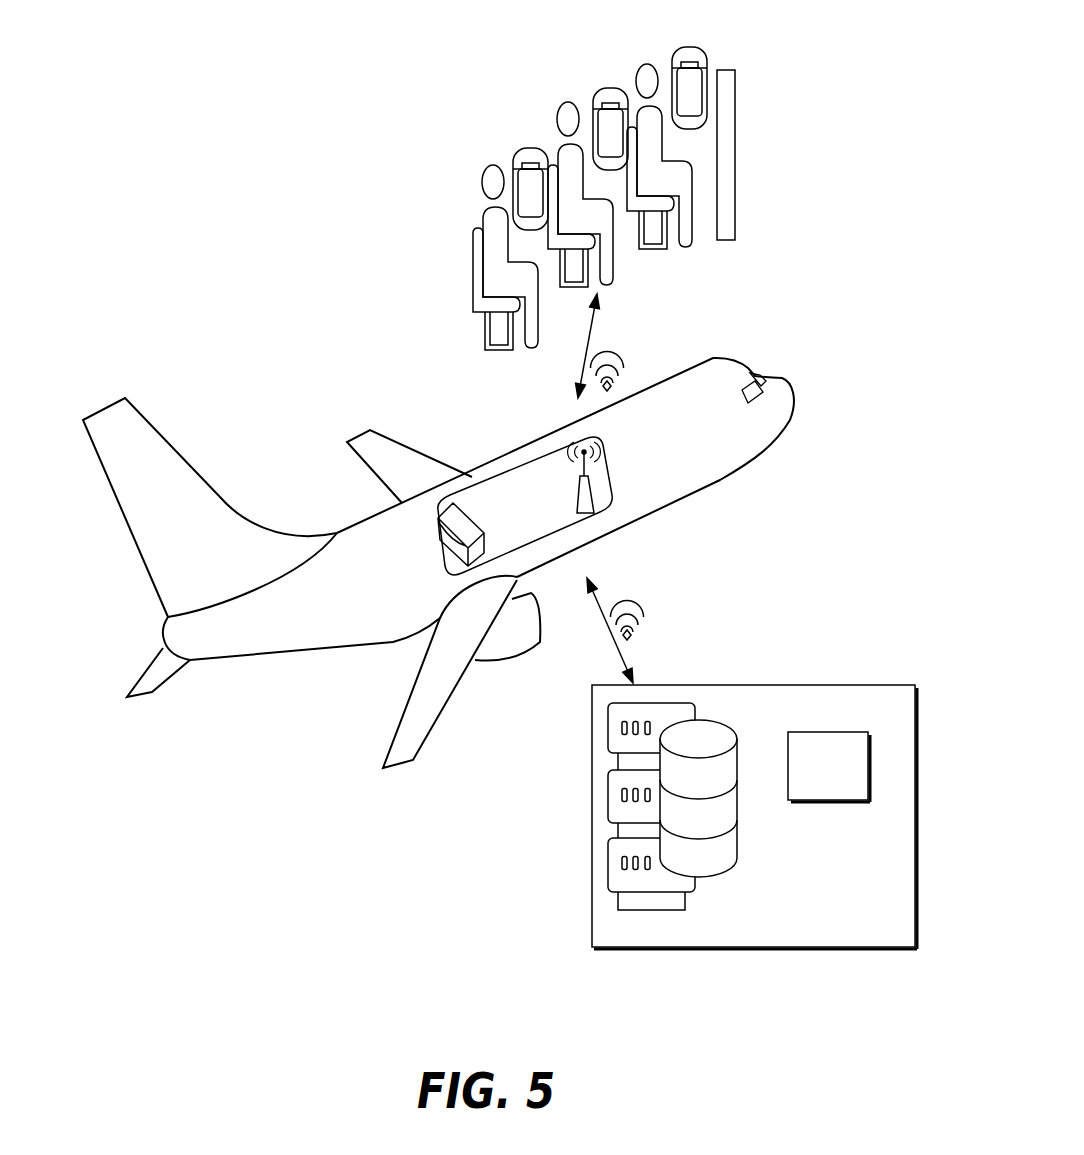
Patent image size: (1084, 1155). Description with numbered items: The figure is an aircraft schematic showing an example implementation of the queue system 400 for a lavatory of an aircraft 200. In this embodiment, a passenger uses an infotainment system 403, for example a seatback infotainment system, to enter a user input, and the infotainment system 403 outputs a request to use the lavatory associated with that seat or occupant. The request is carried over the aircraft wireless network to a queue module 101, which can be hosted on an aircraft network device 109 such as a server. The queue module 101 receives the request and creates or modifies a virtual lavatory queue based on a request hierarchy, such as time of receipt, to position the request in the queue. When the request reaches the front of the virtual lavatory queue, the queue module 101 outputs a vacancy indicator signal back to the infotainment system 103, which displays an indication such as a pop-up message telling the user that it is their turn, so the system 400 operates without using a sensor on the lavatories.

The user input device 103 is at (710, 96).
The infotainment system 403 is at (556, 230).
The aircraft 200 is at (788, 422).
The queue system 400 is at (797, 562).
The queue module 101 is at (850, 778).
The aircraft network device 109 is at (813, 887).